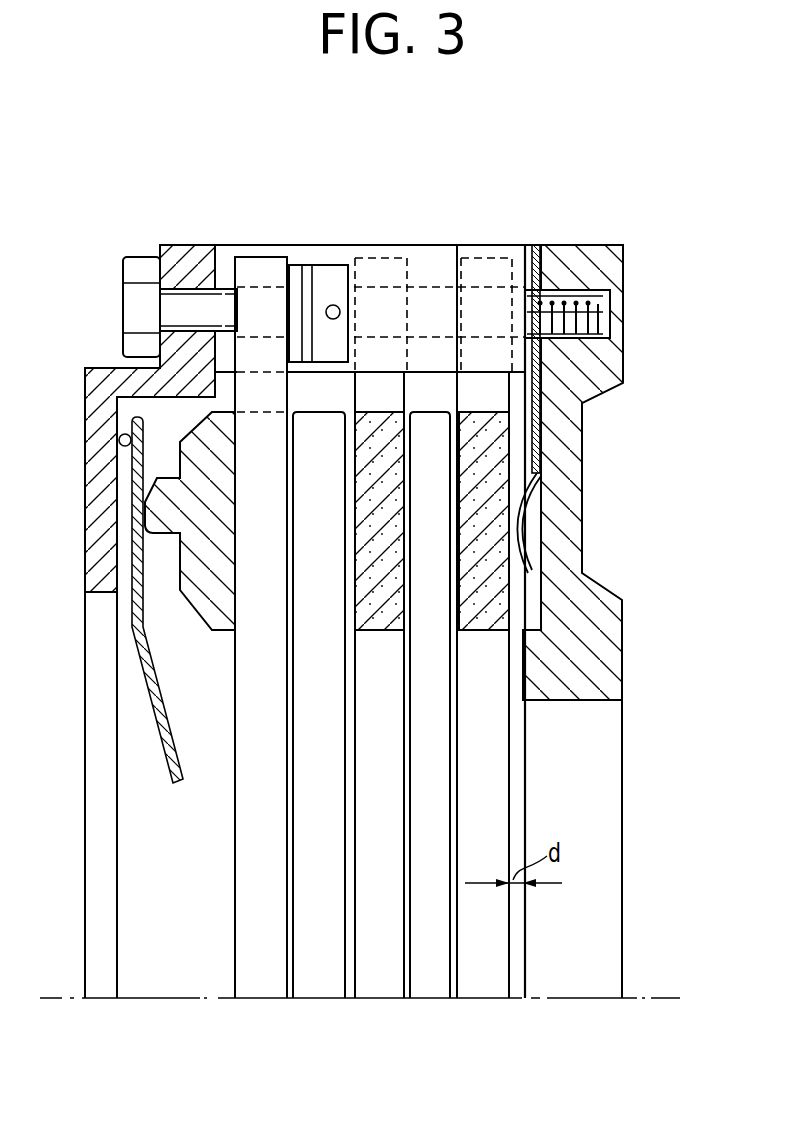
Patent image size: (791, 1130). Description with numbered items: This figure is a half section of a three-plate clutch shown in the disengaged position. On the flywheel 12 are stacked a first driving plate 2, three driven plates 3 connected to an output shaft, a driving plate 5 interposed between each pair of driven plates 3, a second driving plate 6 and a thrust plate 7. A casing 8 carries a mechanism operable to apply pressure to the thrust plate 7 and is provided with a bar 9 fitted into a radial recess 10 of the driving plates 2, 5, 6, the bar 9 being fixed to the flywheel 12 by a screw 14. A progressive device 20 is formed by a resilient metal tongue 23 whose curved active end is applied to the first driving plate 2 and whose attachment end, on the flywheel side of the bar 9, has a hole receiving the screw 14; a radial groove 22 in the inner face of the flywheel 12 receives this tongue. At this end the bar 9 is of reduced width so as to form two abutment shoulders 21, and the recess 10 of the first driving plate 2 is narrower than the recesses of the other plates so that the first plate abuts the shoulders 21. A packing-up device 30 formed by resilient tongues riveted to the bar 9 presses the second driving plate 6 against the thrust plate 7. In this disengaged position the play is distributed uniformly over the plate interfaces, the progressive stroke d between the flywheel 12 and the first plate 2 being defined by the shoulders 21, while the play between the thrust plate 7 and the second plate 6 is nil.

The first driving plate 2 is at (485, 970).
The driven plates 3 is at (318, 970).
The driving plate 5 is at (380, 970).
The second driving plate 6 is at (257, 972).
The thrust plate 7 is at (197, 573).
The casing 8 is at (98, 500).
The bar 9 is at (423, 258).
The radial recess 10 is at (487, 402).
The flywheel 12 is at (600, 653).
The screw 14 is at (168, 308).
The progressive device 20 is at (537, 232).
The abutment shoulders 21 is at (462, 268).
The radial groove 22 is at (530, 500).
The resilient metal tongue 23 is at (517, 522).
The packing-up device 30 is at (316, 270).